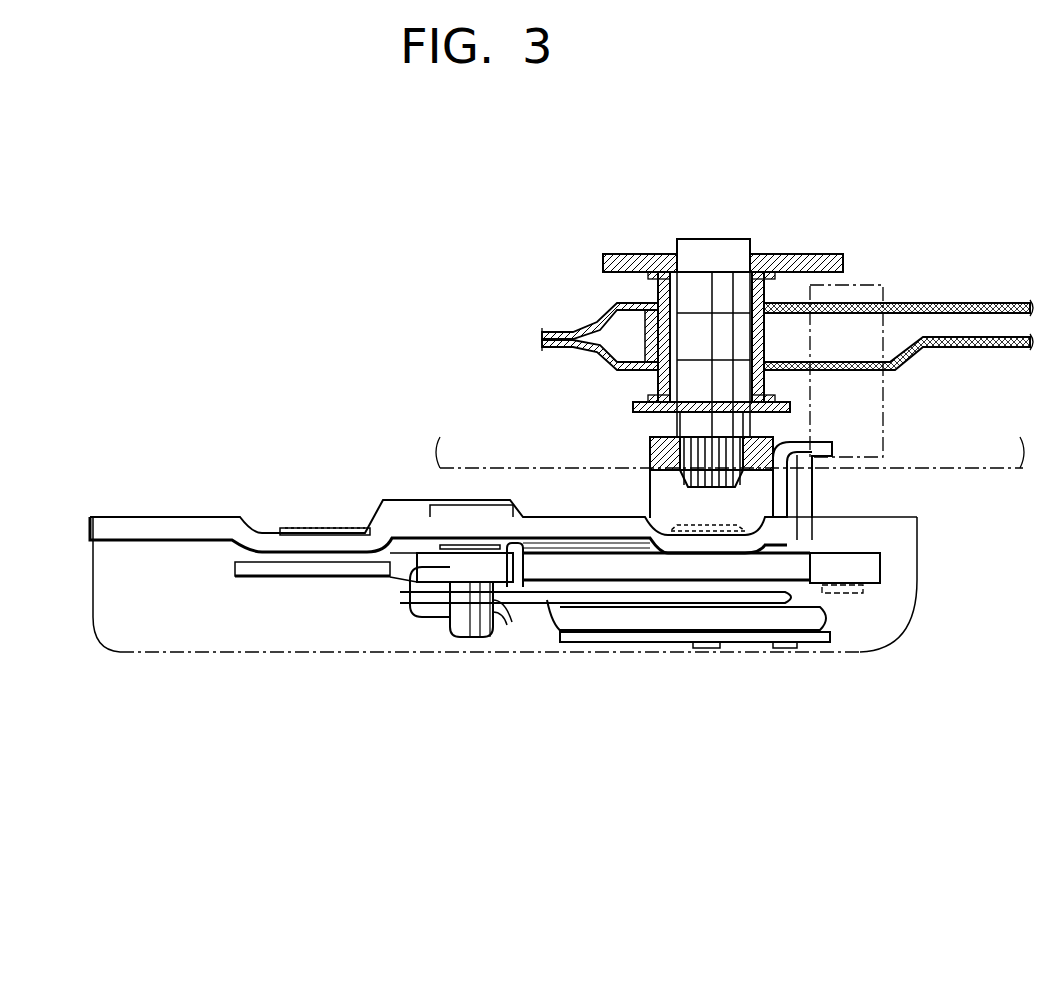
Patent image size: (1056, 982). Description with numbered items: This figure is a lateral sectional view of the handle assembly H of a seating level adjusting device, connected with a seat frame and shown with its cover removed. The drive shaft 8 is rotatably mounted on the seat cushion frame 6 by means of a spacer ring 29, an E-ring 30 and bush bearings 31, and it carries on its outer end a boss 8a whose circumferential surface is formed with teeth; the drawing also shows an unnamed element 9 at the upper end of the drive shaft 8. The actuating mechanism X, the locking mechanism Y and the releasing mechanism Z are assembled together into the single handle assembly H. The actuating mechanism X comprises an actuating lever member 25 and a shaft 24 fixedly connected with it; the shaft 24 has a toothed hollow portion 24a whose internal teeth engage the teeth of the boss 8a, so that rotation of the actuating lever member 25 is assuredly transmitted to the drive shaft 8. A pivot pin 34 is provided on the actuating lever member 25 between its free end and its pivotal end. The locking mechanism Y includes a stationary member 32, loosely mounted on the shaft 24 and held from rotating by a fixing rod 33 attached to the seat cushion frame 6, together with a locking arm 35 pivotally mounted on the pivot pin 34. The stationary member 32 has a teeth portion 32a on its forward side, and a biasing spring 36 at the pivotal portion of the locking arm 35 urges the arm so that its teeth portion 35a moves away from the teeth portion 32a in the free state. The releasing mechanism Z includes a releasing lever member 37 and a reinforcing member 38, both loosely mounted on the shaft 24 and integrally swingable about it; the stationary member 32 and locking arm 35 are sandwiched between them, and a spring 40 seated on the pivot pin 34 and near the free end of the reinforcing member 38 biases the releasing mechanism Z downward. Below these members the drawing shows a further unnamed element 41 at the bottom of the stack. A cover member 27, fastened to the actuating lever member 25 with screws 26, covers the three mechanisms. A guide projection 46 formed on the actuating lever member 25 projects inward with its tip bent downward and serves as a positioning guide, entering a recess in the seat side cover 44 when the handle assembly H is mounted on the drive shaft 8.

The seat cushion frame 6 is at (983, 337).
The drive shaft 8 is at (717, 293).
The boss 8a is at (790, 437).
The flange 9 is at (620, 263).
The shaft 24 is at (660, 470).
The toothed hollow portion 24a is at (700, 432).
The actuating lever member 25 is at (177, 532).
The screws 26 is at (310, 522).
The cover member 27 is at (208, 660).
The spacer ring 29 is at (650, 327).
The E-ring 30 is at (790, 405).
The bush bearings 31 is at (650, 275).
The stationary member 32 is at (670, 570).
The teeth portion 32a is at (580, 623).
The fixing rod 33 is at (870, 540).
The pivot pin 34 is at (470, 620).
The locking arm 35 is at (410, 590).
The teeth portion 35a is at (510, 620).
The biasing spring 36 is at (470, 545).
The releasing lever member 37 is at (233, 568).
The reinforcing member 38 is at (650, 592).
The spring 40 is at (745, 607).
The bottom plate 41 is at (780, 642).
The seat side cover 44 is at (927, 478).
The guide projection 46 is at (803, 460).
The handle assembly H is at (897, 657).
The actuating mechanism X is at (123, 517).
The locking mechanism Y is at (815, 588).
The releasing mechanism Z is at (299, 582).